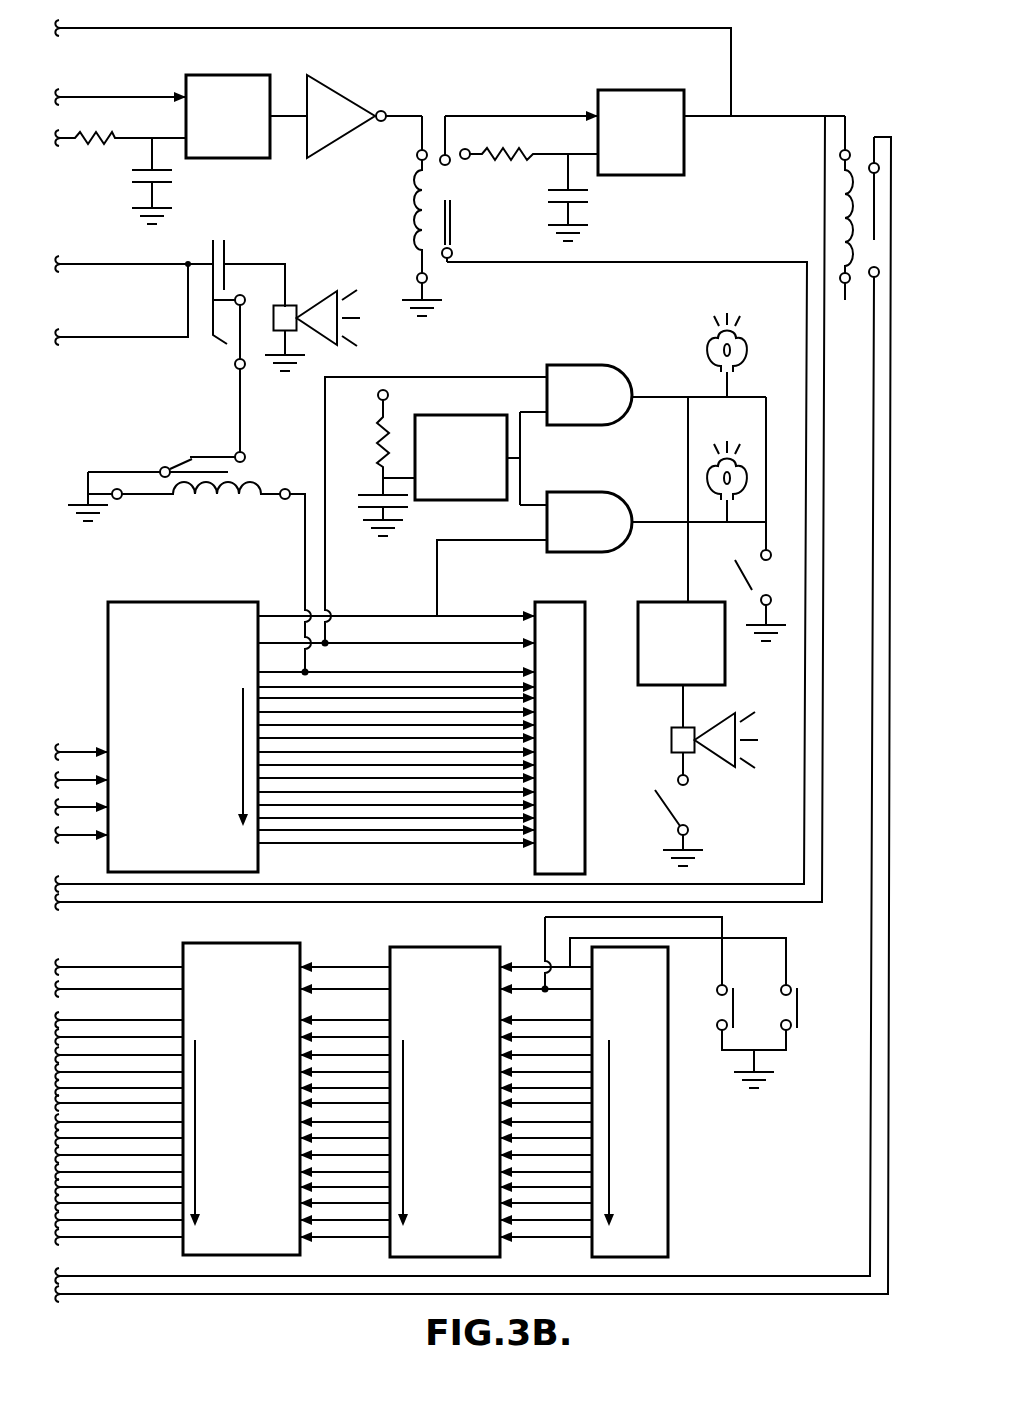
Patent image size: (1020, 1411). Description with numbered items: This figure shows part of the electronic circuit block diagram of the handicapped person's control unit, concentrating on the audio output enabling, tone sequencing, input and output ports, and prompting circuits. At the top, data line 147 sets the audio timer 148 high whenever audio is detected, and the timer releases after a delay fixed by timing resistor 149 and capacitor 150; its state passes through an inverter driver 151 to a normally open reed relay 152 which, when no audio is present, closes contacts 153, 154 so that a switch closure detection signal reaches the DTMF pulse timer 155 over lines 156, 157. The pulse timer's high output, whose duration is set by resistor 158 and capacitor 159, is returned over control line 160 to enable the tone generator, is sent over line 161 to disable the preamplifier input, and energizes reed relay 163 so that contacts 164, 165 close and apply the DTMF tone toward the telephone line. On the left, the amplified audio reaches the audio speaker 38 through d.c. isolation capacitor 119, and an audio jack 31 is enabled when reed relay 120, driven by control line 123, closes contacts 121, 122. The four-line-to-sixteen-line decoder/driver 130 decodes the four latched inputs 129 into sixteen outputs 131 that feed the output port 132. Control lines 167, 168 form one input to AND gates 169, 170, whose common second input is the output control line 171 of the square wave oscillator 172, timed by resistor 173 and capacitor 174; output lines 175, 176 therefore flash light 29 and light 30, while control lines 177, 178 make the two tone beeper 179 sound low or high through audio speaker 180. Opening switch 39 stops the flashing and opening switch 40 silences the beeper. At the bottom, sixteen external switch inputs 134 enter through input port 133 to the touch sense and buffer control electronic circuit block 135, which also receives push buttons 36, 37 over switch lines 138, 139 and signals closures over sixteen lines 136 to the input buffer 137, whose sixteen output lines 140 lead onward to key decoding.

The data line 147 is at (140, 97).
The audio timer 148 is at (272, 158).
The timing resistor 149 is at (107, 142).
The capacitor 150 is at (175, 183).
The inverter driver 151 is at (348, 78).
The reed relay 152 is at (420, 180).
The contact 153 is at (450, 195).
The contact 154 is at (450, 240).
The DTMF pulse timer 155 is at (628, 90).
The control line 156 is at (732, 262).
The line 157 is at (510, 116).
The resistor 158 is at (520, 148).
The capacitor 159 is at (590, 215).
The control line 160 is at (825, 165).
The line 161 is at (407, 28).
The reed relay 163 is at (845, 210).
The contact 164 is at (873, 278).
The contact 165 is at (866, 195).
The d.c. isolation capacitor 119 is at (228, 250).
The audio jack 31 is at (225, 345).
The audio speaker 38 is at (303, 300).
The contact 121 is at (228, 450).
The contact 122 is at (163, 467).
The reed relay 120 is at (185, 498).
The control line 123 is at (303, 555).
The four-line-to-sixteen-line decoder/driver 130 is at (225, 568).
The output lines 129 is at (75, 748).
The outputs 131 is at (450, 843).
The output port 132 is at (587, 750).
The control line 168 is at (330, 578).
The control line 167 is at (440, 578).
The AND gate 170 is at (548, 364).
The AND gate 169 is at (597, 492).
The output control line 171 is at (522, 433).
The square wave oscillator 172 is at (485, 412).
The resistor 173 is at (378, 440).
The capacitor 174 is at (410, 505).
The output line 175 is at (657, 520).
The output line 176 is at (655, 394).
The light 30 is at (712, 350).
The control line 178 is at (694, 426).
The light 29 is at (688, 524).
The switch 39 is at (740, 588).
The control line 177 is at (685, 555).
The two tone beeper 179 is at (725, 662).
The audio speaker 180 is at (740, 762).
The switch 40 is at (660, 810).
The input port 133 is at (670, 1125).
The external switch inputs 134 is at (570, 1237).
The touch sense and buffer control electronic circuit block 135 is at (430, 945).
The lines 136 is at (368, 1237).
The input buffer 137 is at (258, 942).
The switch line 138 is at (523, 960).
The switch line 139 is at (525, 992).
The output lines 140 is at (150, 1237).
The push button 36 is at (740, 1005).
The push button 37 is at (805, 1005).